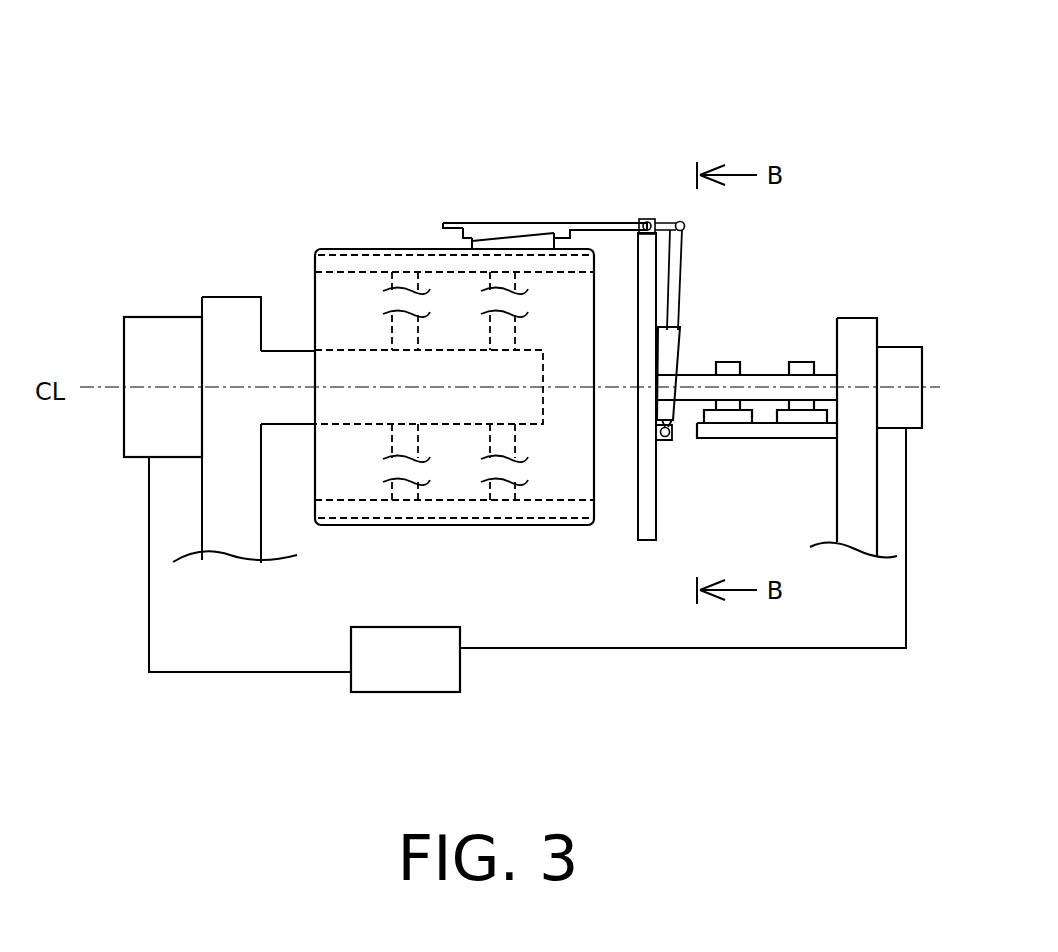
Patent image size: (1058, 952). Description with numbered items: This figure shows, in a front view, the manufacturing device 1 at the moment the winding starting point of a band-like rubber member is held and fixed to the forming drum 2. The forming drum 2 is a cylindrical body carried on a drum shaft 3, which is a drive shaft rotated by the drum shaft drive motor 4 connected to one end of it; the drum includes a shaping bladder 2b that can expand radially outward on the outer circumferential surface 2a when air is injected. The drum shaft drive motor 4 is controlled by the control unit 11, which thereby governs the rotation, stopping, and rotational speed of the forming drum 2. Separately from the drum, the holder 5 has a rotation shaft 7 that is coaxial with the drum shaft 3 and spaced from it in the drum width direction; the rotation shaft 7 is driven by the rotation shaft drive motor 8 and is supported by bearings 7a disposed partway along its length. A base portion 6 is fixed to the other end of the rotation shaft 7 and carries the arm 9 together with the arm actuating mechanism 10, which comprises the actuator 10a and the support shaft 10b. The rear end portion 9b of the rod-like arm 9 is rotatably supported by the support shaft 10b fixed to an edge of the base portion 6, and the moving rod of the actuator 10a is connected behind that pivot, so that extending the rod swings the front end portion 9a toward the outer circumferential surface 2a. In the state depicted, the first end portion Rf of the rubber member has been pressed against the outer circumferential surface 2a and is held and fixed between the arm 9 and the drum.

The device for manufacturing a cylindrical member 1 is at (299, 116).
The forming drum 2 is at (282, 215).
The outer circumferential surface 2a is at (397, 245).
The shaping bladder 2b is at (445, 526).
The drum shaft 3 is at (294, 363).
The drum shaft drive motor 4 is at (175, 327).
The holder 5 is at (840, 285).
The base portion 6 is at (646, 532).
The rotation shaft 7 is at (765, 380).
The bearings 7a is at (718, 402).
The rotation shaft drive motor 8 is at (900, 348).
The arm 9 is at (538, 198).
The front end portion 9a is at (468, 228).
The rear end portion 9b is at (683, 223).
The arm actuating mechanism 10 is at (720, 250).
The actuator 10a is at (672, 374).
The support shaft 10b is at (647, 220).
The control unit 11 is at (390, 640).
The first end portion Rf is at (512, 250).